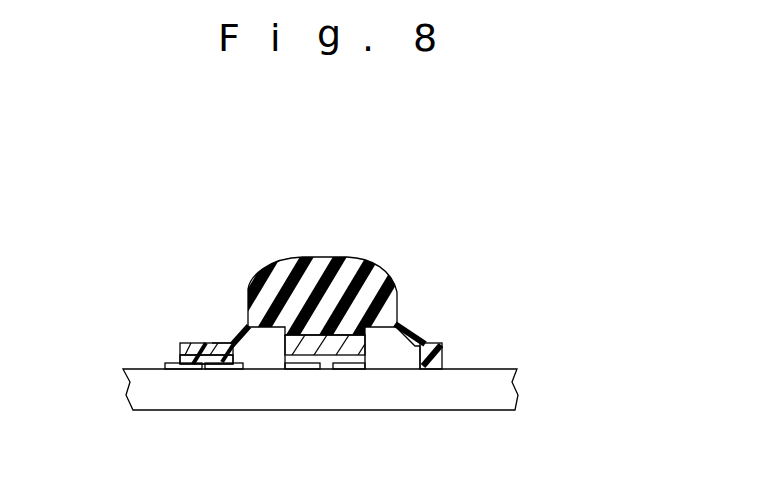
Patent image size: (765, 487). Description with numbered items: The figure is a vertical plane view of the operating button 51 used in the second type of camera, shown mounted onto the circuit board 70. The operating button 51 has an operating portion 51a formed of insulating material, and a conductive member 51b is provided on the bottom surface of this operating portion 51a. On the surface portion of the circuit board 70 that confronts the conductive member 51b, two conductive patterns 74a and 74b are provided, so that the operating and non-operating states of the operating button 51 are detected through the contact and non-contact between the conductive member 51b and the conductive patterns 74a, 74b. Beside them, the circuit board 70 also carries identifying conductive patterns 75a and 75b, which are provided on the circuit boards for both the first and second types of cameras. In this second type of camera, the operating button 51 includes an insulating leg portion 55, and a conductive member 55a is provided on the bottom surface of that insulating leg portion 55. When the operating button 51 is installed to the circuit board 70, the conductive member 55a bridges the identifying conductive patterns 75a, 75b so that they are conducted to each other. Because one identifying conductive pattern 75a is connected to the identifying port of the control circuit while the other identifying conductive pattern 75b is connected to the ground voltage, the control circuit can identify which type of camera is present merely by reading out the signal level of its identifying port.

The operating button 51 is at (338, 257).
The operating portion 51a is at (386, 268).
The conductive member 51b is at (365, 346).
The insulating leg portion 55 is at (193, 343).
The conductive member 55a is at (180, 357).
The circuit board 70 is at (143, 414).
The conductive pattern 74a is at (307, 369).
The conductive pattern 74b is at (358, 369).
The identifying conductive pattern 75a is at (183, 370).
The identifying conductive pattern 75b is at (228, 370).